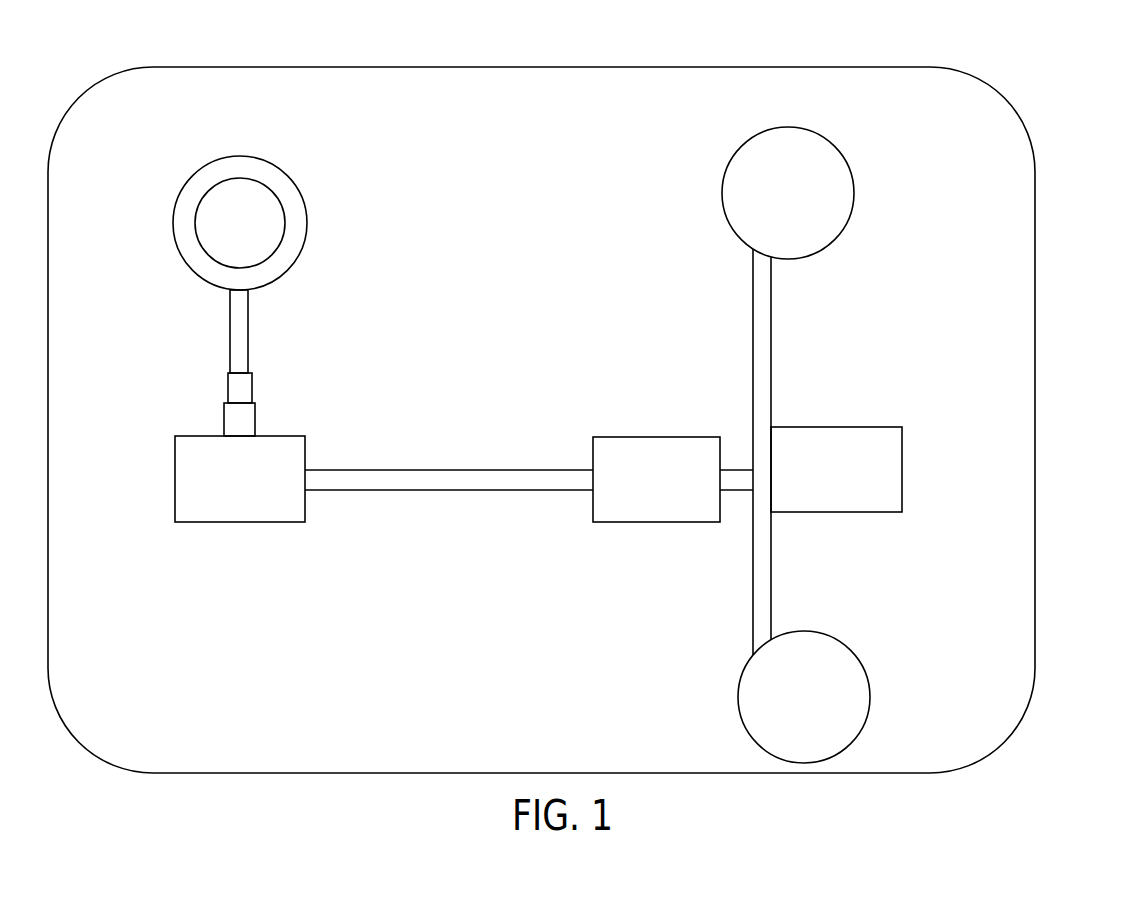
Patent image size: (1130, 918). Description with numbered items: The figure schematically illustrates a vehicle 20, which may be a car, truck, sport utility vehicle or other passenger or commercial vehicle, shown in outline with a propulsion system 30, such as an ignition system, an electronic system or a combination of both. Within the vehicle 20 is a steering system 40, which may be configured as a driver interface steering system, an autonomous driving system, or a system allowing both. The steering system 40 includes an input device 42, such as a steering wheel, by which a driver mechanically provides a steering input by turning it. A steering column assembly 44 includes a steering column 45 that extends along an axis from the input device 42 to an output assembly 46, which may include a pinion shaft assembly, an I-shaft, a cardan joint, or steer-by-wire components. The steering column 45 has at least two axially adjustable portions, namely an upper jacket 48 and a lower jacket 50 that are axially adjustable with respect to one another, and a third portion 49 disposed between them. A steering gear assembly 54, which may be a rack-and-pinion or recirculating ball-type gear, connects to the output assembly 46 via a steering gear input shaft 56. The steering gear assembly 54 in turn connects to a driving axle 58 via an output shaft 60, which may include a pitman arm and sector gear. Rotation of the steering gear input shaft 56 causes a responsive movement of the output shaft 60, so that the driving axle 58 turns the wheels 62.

The vehicle 20 is at (1043, 117).
The propulsion system 30 is at (847, 475).
The steering system 40 is at (875, 156).
The input device 42 is at (192, 181).
The steering column assembly 44 is at (350, 326).
The steering column 45 is at (194, 347).
The output assembly 46 is at (252, 491).
The upper jacket 48 is at (220, 330).
The third portion 49 is at (220, 390).
The lower jacket 50 is at (212, 418).
The steering gear assembly 54 is at (668, 491).
The steering gear input shaft 56 is at (553, 469).
The driving axle 58 is at (772, 538).
The output shaft 60 is at (745, 468).
The wheels 62 is at (852, 220).